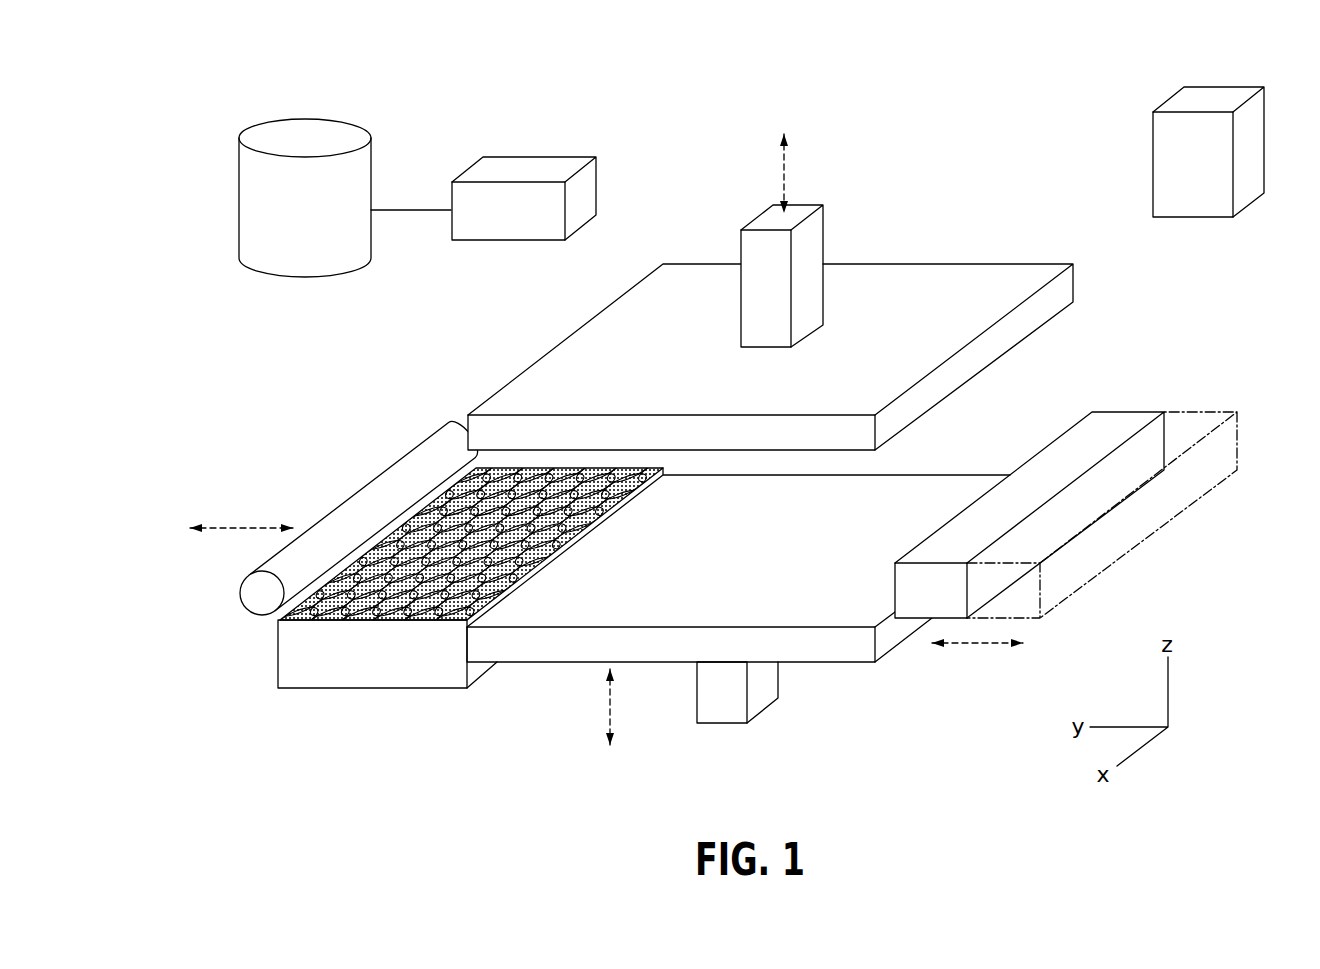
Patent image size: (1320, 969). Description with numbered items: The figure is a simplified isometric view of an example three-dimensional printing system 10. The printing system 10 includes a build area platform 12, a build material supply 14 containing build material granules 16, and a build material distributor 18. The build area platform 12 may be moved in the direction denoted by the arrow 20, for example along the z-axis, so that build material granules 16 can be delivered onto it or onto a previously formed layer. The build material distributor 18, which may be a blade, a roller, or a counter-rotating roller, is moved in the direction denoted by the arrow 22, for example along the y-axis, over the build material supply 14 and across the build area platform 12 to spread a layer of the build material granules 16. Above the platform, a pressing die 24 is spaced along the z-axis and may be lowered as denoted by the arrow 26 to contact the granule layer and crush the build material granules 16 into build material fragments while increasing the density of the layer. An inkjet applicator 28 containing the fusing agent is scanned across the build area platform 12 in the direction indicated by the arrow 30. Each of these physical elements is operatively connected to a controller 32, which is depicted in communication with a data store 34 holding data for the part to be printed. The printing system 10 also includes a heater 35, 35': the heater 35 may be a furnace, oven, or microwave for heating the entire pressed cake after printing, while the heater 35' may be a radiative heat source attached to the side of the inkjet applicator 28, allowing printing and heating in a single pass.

The printing system 10 is at (381, 78).
The build area platform 12 is at (833, 663).
The build material supply 14 is at (367, 690).
The build material granules 16 is at (305, 612).
The build material distributor 18 is at (359, 490).
The arrow 20 is at (610, 695).
The arrow 22 is at (233, 527).
The pressing die 24 is at (1000, 263).
The arrow 26 is at (786, 166).
The inkjet applicator 28 is at (1122, 412).
The arrow 30 is at (994, 644).
The controller 32 is at (529, 155).
The data store 34 is at (275, 200).
The heater 35 is at (1208, 194).
The heater 35' is at (1107, 464).